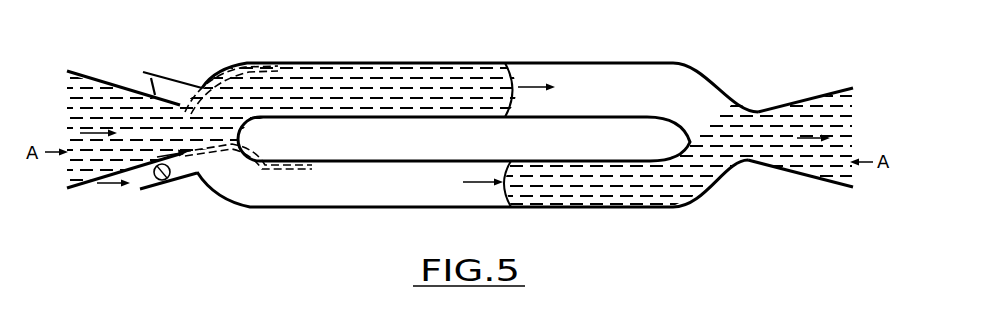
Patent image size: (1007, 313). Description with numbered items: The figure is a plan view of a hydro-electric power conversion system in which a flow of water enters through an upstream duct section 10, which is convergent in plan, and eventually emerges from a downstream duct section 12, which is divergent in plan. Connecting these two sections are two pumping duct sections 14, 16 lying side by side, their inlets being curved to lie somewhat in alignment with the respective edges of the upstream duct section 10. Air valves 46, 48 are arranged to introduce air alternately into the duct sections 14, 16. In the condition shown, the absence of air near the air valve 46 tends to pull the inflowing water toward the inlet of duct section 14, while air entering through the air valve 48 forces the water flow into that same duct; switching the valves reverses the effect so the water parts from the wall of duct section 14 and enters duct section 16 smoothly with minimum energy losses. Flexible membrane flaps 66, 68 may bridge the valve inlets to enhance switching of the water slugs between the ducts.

The upstream duct section 10 is at (82, 72).
The downstream duct section 12 is at (850, 88).
The pumping duct section 14 is at (582, 63).
The pumping duct section 16 is at (624, 208).
The air valve 46 is at (155, 95).
The air valve 48 is at (143, 185).
The flexible membrane flap 66 is at (223, 73).
The flexible membrane flap 68 is at (266, 167).